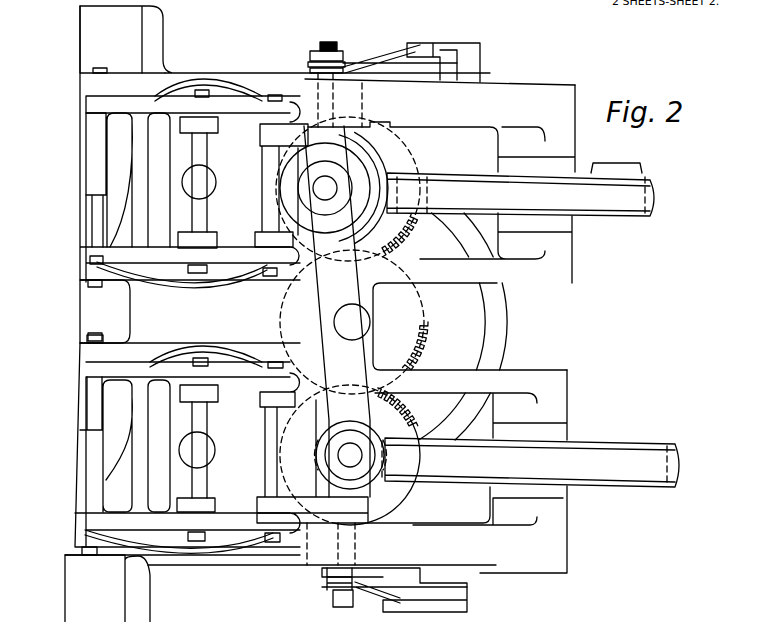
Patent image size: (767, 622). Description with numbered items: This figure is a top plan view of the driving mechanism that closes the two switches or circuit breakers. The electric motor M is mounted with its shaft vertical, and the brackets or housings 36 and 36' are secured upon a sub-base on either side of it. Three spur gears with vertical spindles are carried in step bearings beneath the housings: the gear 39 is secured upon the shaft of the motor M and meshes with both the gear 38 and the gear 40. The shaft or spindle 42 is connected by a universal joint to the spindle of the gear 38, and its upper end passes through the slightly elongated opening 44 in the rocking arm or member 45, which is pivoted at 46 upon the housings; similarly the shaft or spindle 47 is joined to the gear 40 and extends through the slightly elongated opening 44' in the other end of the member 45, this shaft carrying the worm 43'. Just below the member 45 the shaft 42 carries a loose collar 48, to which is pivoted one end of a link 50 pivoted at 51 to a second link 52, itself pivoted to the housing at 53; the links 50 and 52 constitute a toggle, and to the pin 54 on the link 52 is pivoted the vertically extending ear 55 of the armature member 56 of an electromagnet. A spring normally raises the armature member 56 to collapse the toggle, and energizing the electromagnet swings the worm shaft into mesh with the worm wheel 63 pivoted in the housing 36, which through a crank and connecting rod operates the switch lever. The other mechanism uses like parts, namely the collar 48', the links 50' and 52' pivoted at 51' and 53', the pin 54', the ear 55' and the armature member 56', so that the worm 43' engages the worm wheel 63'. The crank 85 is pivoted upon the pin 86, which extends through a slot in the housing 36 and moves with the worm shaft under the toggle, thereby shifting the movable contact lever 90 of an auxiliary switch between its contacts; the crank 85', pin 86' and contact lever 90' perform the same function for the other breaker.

The bracket or housing 36 is at (467, 481).
The bracket or housing 36' is at (447, 212).
The spur gear 38 is at (393, 427).
The spur gear 39 is at (420, 335).
The spur gear 40 is at (407, 225).
The shaft or spindle 42 is at (353, 458).
The worm 43' is at (408, 187).
The slightly elongated opening 44 is at (382, 477).
The slightly elongated opening 44' is at (325, 201).
The rocking arm or member 45 is at (340, 350).
The pivot 46 is at (340, 317).
The shaft or spindle 47 is at (325, 188).
The loose collar 48 is at (367, 485).
The loose collar 48' is at (351, 173).
The link 50 is at (298, 461).
The link 50' is at (280, 143).
The pivot 51 is at (273, 452).
The pivot 51' is at (263, 175).
The link 52 is at (179, 454).
The link 52' is at (182, 174).
The pivot 53 is at (254, 478).
The pivot 53' is at (161, 174).
The pin 54 is at (211, 450).
The pin 54' is at (189, 182).
The vertically extending ear 55 is at (189, 448).
The vertically extending ear 55' is at (198, 182).
The armature member 56 is at (97, 444).
The armature member 56' is at (101, 180).
The worm wheel 63 is at (530, 453).
The worm wheel 63' is at (520, 203).
The crank 85 is at (394, 569).
The crank 85' is at (400, 75).
The pin 86 is at (319, 565).
The pin 86' is at (335, 74).
The movable contact lever 90 is at (417, 590).
The movable contact lever 90' is at (467, 62).
The electric motor M is at (487, 325).